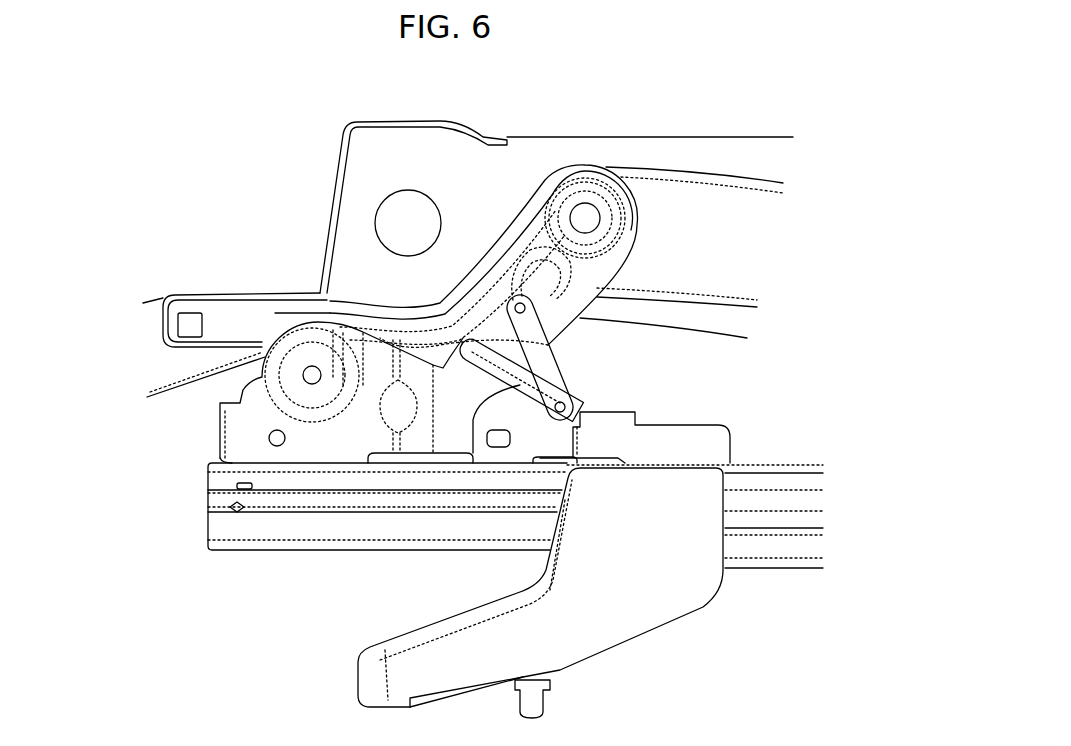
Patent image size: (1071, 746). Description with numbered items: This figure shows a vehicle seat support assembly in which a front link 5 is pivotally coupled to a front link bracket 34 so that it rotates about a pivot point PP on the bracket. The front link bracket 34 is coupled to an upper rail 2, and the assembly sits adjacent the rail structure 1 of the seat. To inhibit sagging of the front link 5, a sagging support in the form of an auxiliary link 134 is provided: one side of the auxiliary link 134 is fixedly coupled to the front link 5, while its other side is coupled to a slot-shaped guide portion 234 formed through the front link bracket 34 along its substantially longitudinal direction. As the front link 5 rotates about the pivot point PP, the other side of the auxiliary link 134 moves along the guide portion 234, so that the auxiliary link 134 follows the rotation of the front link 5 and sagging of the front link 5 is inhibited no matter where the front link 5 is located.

The upper rail 1 is at (768, 550).
The upper rail 2 is at (302, 532).
The front link 5 is at (563, 188).
The front link bracket 34 is at (197, 422).
The auxiliary link 134 is at (555, 365).
The guide portion 234 is at (473, 470).
The pivot point PP is at (313, 365).